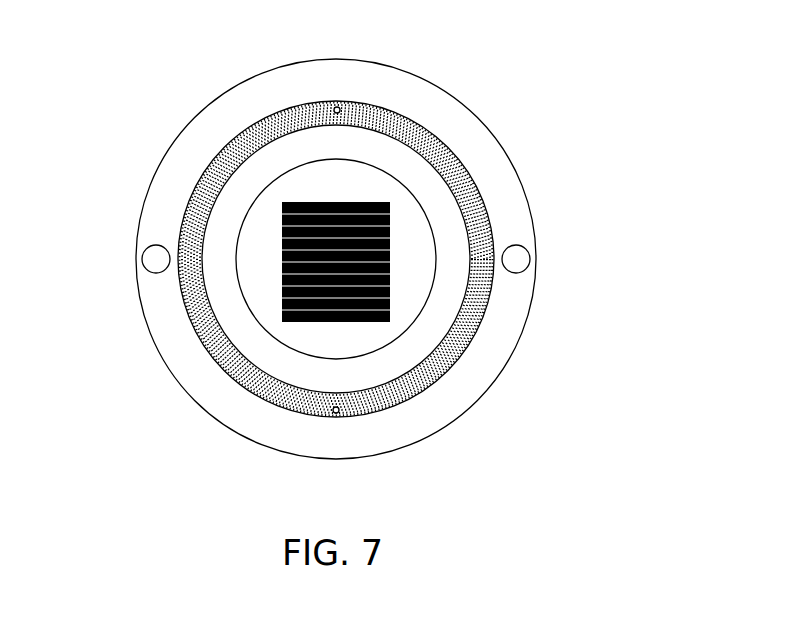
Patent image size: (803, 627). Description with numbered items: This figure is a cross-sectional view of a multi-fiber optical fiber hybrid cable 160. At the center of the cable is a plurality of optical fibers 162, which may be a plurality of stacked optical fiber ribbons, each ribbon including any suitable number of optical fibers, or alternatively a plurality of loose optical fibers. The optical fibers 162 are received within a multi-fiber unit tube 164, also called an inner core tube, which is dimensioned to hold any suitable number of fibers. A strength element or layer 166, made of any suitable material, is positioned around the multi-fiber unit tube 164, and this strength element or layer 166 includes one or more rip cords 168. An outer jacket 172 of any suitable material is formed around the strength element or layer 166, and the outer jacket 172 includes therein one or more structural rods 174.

The multi-fiber optical fiber hybrid cable 160 is at (680, 20).
The plurality of optical fibers 162 is at (392, 242).
The multi-fiber unit tube 164 is at (428, 185).
The strength element or layer 166 is at (404, 128).
The rip cord 168 is at (338, 106).
The outer jacket 172 is at (498, 345).
The structural rod 174 is at (150, 257).